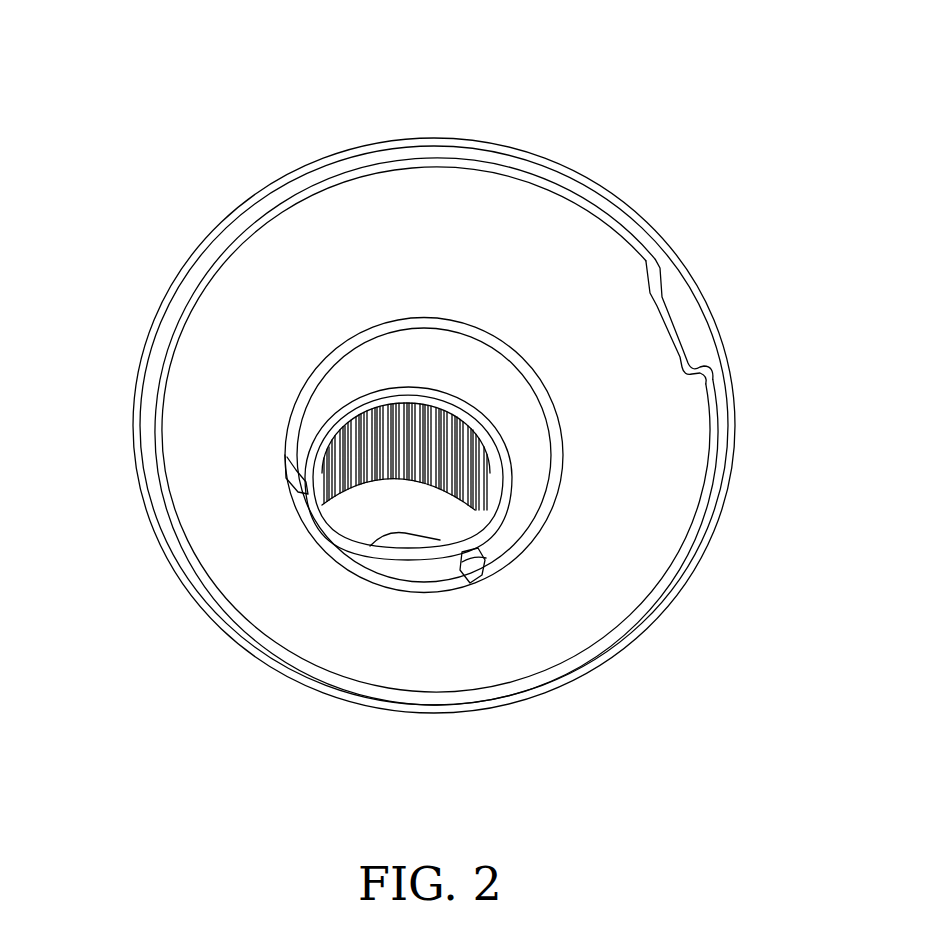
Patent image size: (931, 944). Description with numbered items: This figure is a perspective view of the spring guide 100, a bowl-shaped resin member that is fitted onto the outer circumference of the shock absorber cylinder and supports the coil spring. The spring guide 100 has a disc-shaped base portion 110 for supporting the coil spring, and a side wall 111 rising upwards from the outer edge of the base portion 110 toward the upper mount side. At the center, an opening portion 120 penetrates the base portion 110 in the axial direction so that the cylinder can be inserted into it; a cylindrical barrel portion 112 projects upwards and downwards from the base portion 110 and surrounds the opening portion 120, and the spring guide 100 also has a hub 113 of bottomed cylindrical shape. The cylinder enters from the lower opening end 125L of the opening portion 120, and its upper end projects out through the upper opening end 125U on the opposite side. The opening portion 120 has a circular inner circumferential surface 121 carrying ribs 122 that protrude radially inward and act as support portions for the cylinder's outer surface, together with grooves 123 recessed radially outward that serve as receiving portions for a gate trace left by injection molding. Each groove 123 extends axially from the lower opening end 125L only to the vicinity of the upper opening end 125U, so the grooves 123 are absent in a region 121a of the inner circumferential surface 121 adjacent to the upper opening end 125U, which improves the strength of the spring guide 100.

The spring guide 100 is at (135, 100).
The base portion 110 is at (285, 598).
The side wall 111 is at (268, 182).
The barrel portion 112 is at (310, 502).
The hub 113 is at (437, 350).
The opening portion 120 is at (438, 545).
The inner circumferential surface 121 is at (383, 415).
The region 121a is at (418, 437).
The ribs 122 is at (375, 442).
The grooves 123 is at (393, 429).
The lower opening end 125L is at (363, 492).
The upper opening end 125U is at (438, 545).